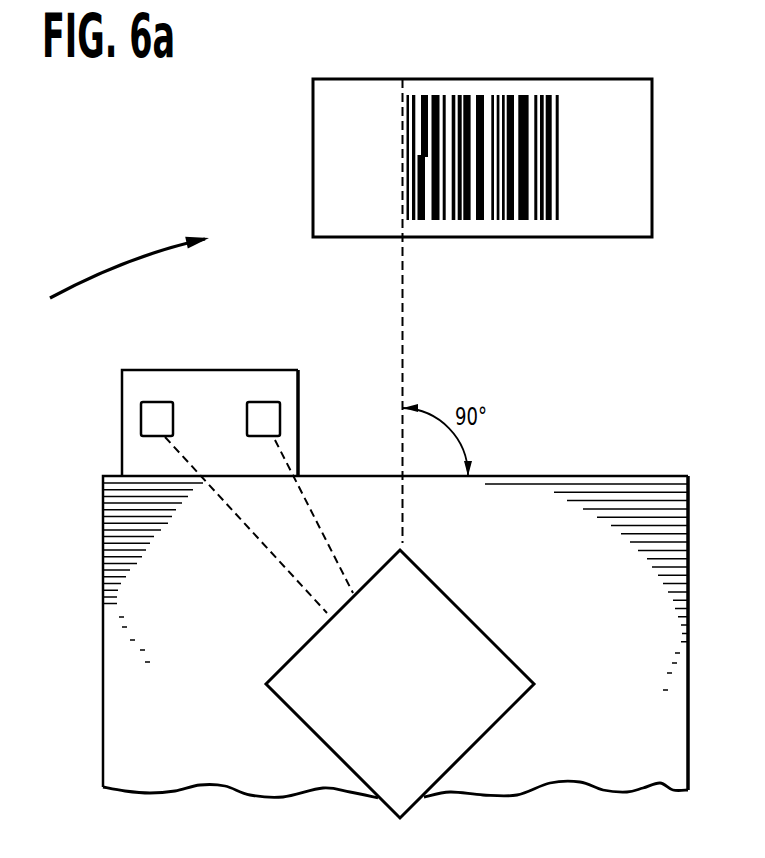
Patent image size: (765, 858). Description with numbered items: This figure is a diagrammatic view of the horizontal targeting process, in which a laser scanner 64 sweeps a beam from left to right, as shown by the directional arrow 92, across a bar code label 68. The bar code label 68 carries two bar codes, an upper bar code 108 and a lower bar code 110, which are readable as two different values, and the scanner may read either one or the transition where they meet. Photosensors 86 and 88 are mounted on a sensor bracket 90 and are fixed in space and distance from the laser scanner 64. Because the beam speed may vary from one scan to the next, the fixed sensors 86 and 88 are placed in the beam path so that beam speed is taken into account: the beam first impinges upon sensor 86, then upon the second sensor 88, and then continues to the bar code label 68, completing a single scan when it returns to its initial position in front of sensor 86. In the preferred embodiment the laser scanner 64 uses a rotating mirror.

The laser scanner 64 is at (123, 590).
The bar code label 68 is at (633, 121).
The photosensor 86 is at (141, 418).
The photosensor 88 is at (280, 418).
The sensor bracket 90 is at (208, 370).
The directional arrow 92 is at (118, 264).
The upper bar code 108 is at (407, 120).
The lower bar code 110 is at (407, 205).